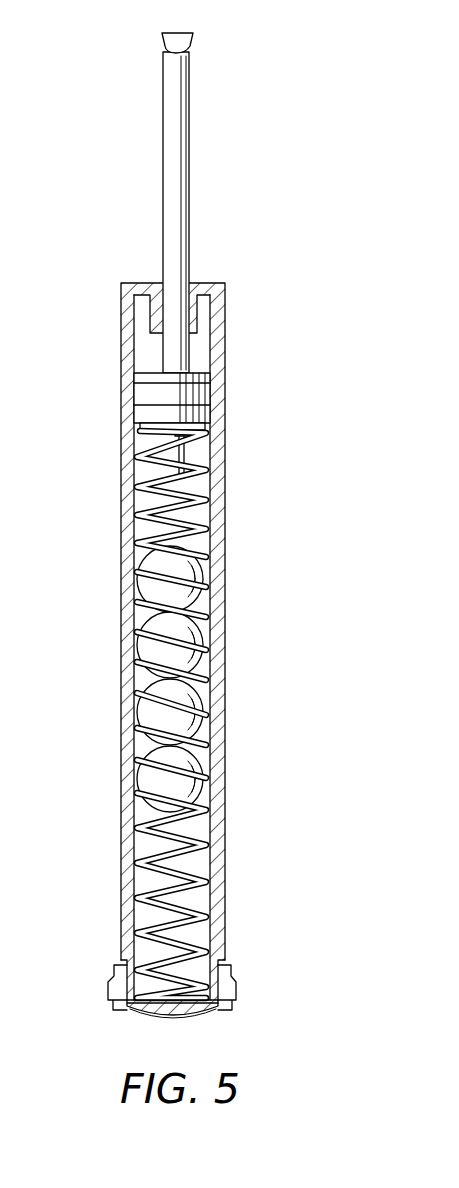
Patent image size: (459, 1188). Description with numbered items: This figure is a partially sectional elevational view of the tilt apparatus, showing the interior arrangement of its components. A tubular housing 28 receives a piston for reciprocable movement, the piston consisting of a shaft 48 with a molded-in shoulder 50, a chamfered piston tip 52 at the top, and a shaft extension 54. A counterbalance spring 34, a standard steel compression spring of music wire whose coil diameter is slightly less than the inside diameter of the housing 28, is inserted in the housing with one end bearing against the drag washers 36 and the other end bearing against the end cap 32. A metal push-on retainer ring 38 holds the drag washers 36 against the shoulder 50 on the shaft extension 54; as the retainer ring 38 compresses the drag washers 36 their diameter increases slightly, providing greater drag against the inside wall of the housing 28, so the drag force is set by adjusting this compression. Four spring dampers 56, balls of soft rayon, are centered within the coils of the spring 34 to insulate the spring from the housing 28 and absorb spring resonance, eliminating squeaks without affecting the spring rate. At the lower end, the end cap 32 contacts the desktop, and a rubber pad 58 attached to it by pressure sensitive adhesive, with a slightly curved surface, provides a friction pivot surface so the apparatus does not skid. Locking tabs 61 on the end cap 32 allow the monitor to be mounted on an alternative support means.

The tubular housing 28 is at (223, 922).
The end cap 32 is at (117, 972).
The counterbalance spring 34 is at (192, 517).
The drag washers 36 is at (140, 414).
The retainer ring 38 is at (205, 428).
The shaft 48 is at (192, 185).
The shoulder 50 is at (132, 367).
The chamfered piston tip 52 is at (164, 40).
The shaft extension 54 is at (167, 456).
The spring dampers 56 is at (190, 578).
The rubber pad 58 is at (147, 1012).
The locking tabs 61 is at (108, 992).